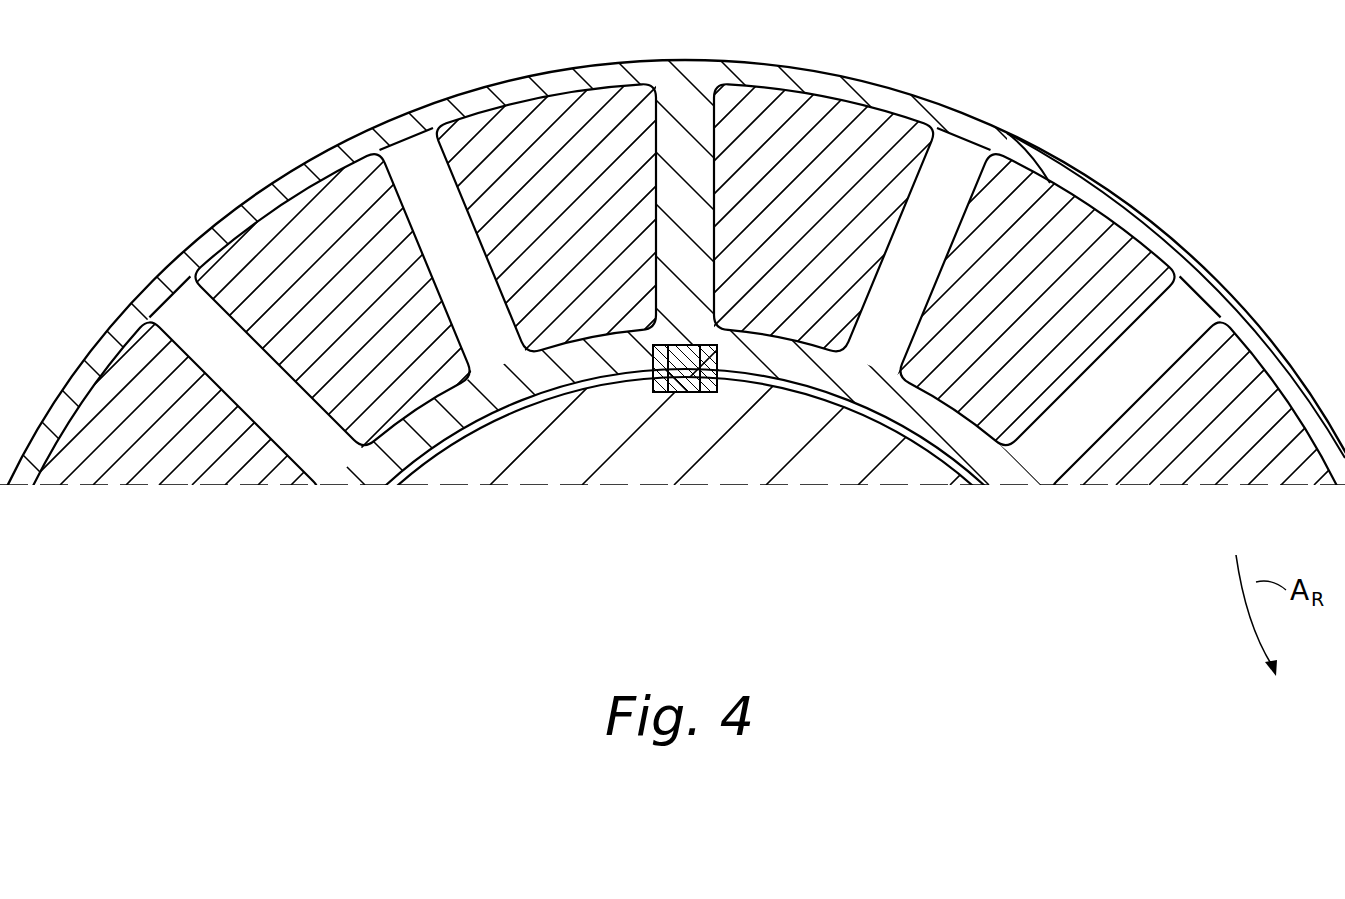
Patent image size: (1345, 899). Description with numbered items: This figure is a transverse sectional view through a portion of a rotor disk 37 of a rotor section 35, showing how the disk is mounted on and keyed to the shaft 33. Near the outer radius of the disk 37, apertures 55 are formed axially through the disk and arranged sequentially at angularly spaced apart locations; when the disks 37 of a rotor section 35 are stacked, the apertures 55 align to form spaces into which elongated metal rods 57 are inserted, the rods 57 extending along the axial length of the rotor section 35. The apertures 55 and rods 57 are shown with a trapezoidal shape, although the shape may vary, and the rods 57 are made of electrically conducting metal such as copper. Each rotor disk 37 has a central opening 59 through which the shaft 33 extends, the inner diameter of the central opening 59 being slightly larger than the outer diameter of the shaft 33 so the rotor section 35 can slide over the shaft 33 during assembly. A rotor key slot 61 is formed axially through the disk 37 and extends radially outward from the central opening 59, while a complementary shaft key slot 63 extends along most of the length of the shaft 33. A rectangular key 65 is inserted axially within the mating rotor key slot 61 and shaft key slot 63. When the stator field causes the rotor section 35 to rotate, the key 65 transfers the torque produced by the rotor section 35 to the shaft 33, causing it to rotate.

The shaft 33 is at (703, 477).
The rotor section 35 is at (396, 86).
The rotor disk 37 is at (322, 156).
The aperture 55 is at (468, 193).
The rod 57 is at (567, 160).
The central opening 59 is at (795, 380).
The rotor key slot 61 is at (667, 380).
The shaft key slot 63 is at (688, 380).
The key 65 is at (690, 380).